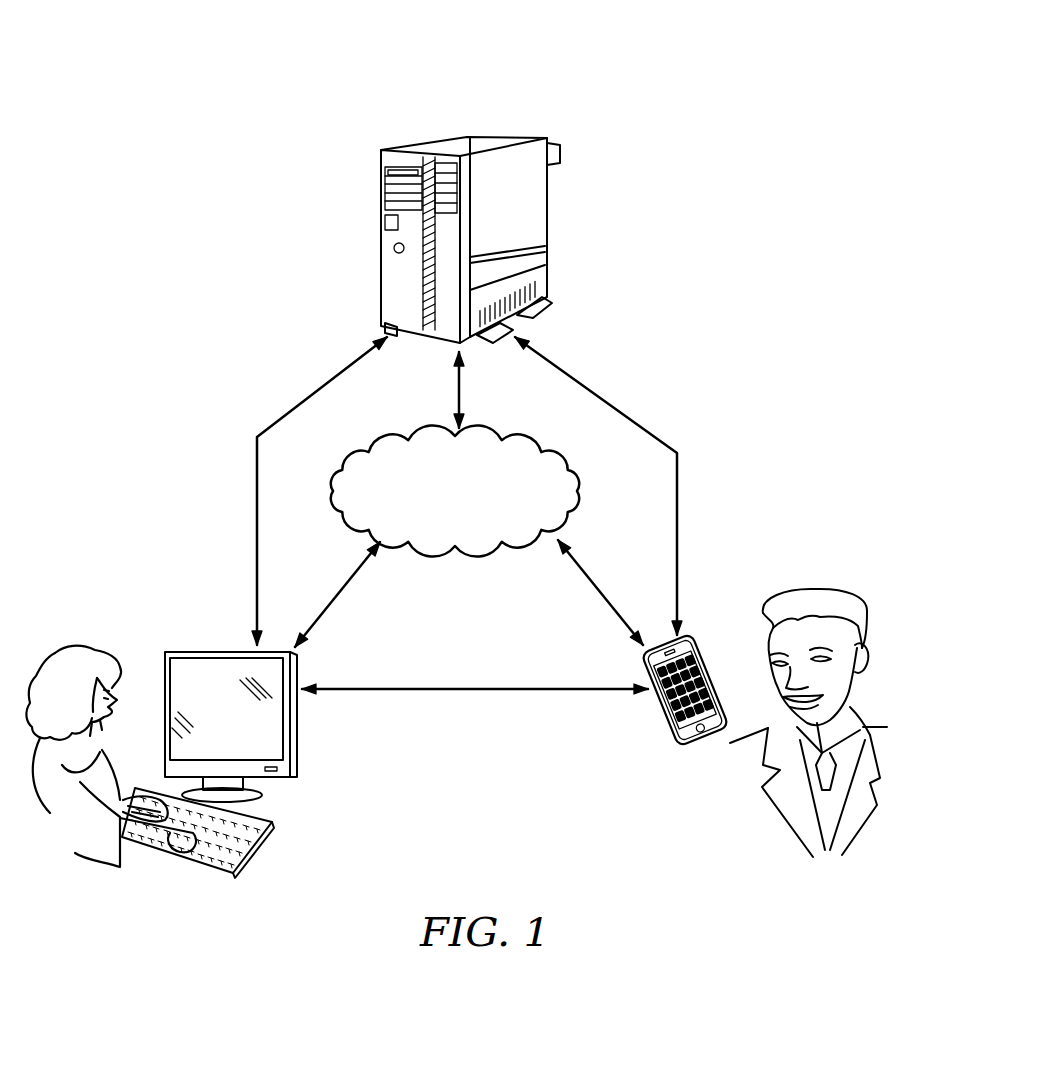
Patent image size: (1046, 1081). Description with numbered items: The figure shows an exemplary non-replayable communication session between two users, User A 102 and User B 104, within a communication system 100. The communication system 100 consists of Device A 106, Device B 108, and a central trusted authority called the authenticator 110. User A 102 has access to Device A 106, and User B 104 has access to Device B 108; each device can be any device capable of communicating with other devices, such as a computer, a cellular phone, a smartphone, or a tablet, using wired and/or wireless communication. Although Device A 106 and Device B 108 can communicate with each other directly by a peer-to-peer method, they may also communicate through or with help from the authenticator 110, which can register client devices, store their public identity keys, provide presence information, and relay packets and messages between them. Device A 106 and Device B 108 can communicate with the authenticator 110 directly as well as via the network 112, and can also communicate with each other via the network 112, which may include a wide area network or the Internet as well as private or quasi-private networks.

The communication system 100 is at (640, 68).
The User A 102 is at (62, 648).
The User B 104 is at (820, 590).
The Device A 106 is at (202, 650).
The Device B 108 is at (703, 640).
The authenticator 110 is at (381, 212).
The network 112 is at (459, 548).